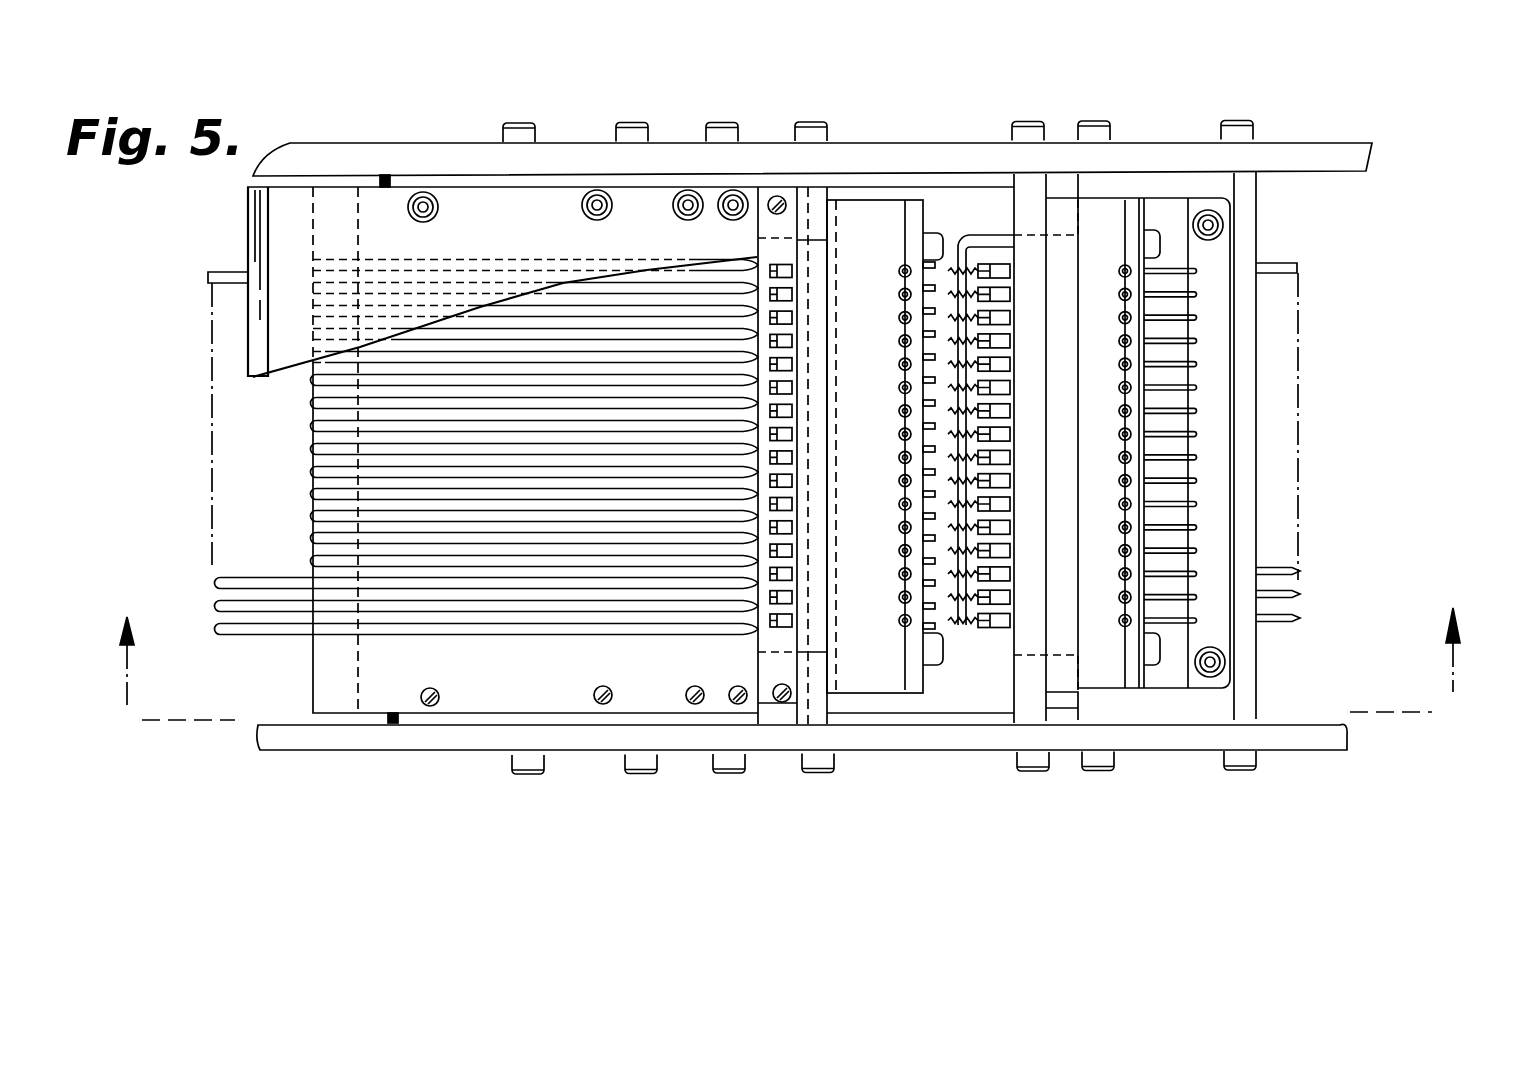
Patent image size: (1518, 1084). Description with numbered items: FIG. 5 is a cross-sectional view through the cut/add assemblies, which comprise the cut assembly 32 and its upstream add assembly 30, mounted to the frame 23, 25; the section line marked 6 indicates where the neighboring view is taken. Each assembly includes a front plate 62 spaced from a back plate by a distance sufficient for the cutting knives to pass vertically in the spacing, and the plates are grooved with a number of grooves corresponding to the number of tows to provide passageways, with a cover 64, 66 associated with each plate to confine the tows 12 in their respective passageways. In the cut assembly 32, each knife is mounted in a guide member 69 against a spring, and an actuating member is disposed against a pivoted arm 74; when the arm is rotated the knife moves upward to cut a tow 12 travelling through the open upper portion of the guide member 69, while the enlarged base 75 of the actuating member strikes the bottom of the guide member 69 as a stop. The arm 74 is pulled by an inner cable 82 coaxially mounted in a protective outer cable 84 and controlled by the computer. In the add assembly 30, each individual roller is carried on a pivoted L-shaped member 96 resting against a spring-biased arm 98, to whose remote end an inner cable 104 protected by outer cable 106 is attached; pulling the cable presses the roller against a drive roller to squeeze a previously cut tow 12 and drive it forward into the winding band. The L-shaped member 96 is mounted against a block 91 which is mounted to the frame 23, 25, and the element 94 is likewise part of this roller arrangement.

The frame 23 is at (433, 165).
The frame 25 is at (400, 742).
The add assembly 30 is at (1154, 186).
The cut assembly 32 is at (899, 189).
The front plate 62 is at (330, 682).
The cover 64 is at (947, 690).
The cover 66 is at (286, 236).
The guide member 69 is at (782, 712).
The pivoted arm 74 is at (793, 551).
The enlarged base 75 is at (800, 446).
The inner cable 82 is at (903, 568).
The outer cable 84 is at (903, 619).
The block 91 is at (1253, 198).
The springs 94 is at (958, 623).
The L-shaped member 96 is at (977, 258).
The arm 98 is at (1000, 626).
The inner cable 104 is at (1124, 569).
The outer cable 106 is at (1124, 620).
The tow 12 is at (220, 630).
The section line 6- 6 is at (786, 677).